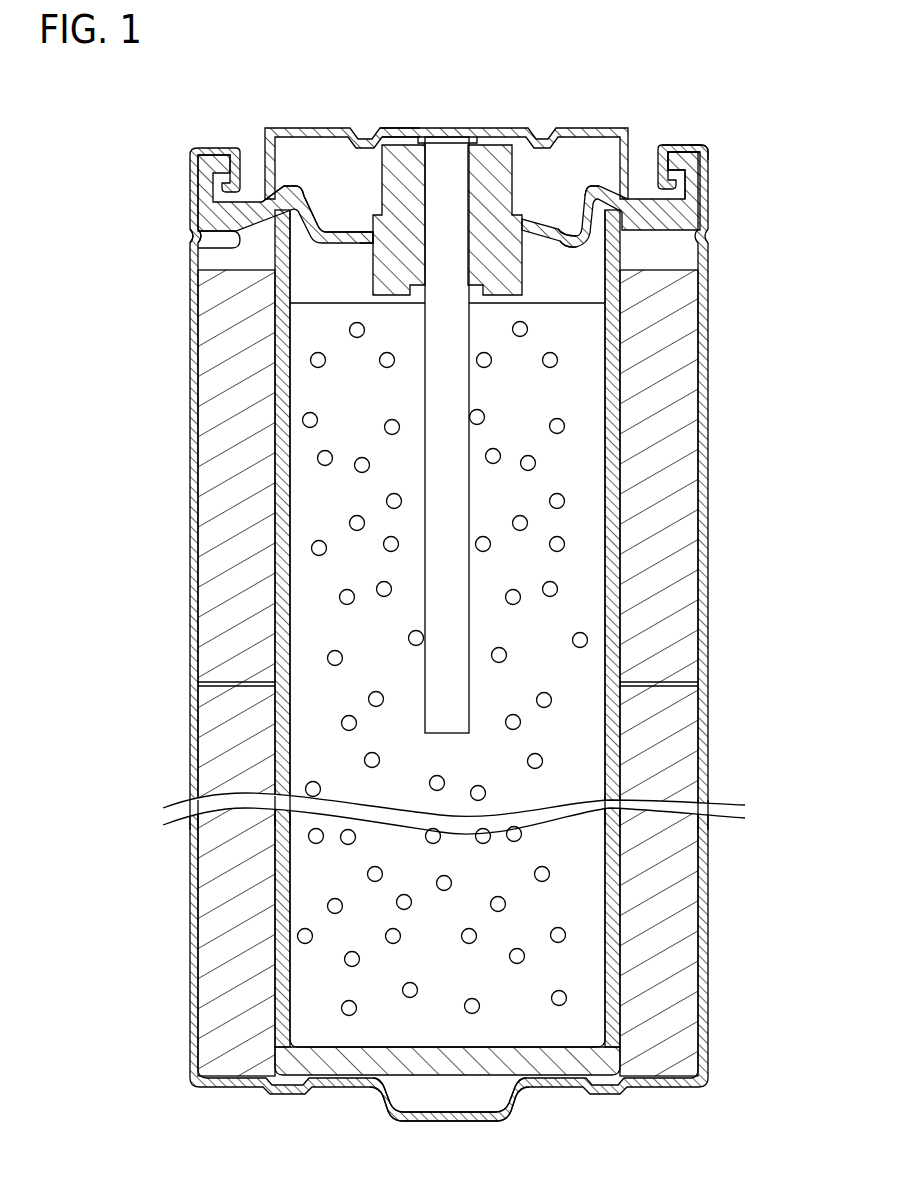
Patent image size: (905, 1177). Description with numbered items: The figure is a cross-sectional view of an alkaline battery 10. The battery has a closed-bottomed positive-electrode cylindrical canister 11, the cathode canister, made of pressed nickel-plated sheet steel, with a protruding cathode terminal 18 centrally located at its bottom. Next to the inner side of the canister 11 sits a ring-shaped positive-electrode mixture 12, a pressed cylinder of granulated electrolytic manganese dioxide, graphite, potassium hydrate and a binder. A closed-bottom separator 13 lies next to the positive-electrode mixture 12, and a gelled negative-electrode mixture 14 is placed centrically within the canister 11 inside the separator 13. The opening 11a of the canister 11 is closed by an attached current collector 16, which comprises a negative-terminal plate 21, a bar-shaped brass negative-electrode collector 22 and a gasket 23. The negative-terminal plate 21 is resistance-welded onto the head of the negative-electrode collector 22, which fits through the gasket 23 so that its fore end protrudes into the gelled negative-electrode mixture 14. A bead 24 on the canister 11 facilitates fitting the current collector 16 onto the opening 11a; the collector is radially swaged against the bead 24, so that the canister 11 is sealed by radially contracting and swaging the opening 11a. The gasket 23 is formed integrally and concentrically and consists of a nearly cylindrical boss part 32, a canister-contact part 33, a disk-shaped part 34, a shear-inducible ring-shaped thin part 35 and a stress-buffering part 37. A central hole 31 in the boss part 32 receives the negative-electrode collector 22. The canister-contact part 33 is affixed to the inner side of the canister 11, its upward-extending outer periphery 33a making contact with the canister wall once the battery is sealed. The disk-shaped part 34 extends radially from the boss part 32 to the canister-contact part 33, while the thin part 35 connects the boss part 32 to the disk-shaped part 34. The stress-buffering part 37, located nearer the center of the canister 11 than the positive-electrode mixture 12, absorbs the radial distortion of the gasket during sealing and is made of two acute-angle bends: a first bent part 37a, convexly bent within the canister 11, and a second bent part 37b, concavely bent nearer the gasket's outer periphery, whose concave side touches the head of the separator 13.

The alkaline battery 10 is at (716, 130).
The positive-electrode cylindrical canister 11 is at (710, 372).
The opening 11a is at (660, 150).
The ring-shaped positive-electrode mixture 12 is at (680, 455).
The closed-bottom separator 13 is at (610, 664).
The gelled negative-electrode mixture 14 is at (593, 545).
The current collector 16 is at (520, 128).
The cathode terminal 18 is at (517, 1103).
The negative-terminal plate 21 is at (398, 128).
The negative-electrode collector 22 is at (428, 392).
The gasket 23 is at (360, 215).
The bead 24 is at (188, 233).
The central hole 31 is at (455, 140).
The boss part 32 is at (505, 272).
The canister-contact part 33 is at (188, 182).
The outer periphery 33a is at (712, 195).
The disk-shaped part 34 is at (202, 247).
The shear-inducible ring-shaped thin part 35 is at (373, 230).
The stress-buffering part 37 is at (303, 193).
The first bent part 37a is at (570, 224).
The second bent part 37b is at (592, 187).